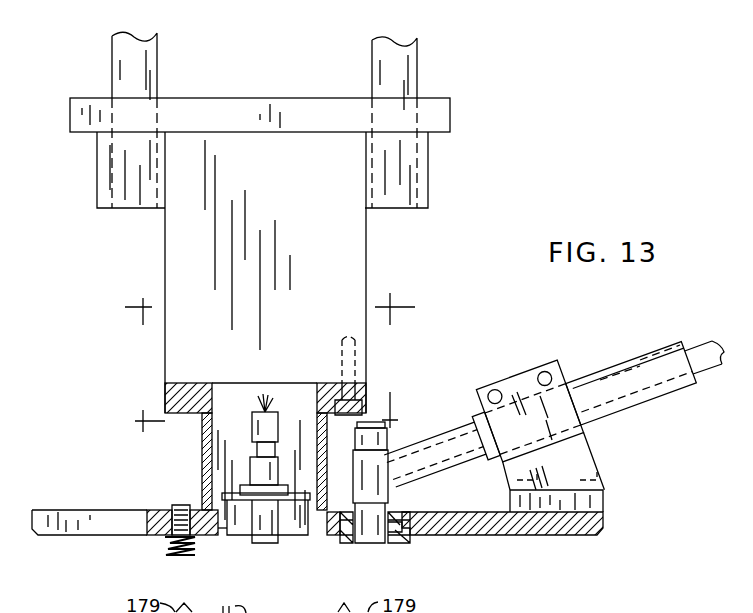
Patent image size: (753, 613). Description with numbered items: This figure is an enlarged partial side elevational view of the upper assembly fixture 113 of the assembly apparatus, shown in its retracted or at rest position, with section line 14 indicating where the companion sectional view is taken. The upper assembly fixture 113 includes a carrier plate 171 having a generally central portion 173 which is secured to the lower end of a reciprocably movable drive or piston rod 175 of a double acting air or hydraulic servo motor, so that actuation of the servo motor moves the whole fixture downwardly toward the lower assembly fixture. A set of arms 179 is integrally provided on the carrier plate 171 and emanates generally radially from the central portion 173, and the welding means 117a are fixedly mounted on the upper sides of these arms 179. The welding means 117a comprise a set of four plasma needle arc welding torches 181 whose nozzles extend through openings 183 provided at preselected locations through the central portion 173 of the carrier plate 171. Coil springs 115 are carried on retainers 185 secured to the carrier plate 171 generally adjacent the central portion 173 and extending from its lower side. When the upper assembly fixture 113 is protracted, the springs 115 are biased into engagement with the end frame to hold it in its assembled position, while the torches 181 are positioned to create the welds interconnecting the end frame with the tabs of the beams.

The section line 14- 14 is at (10, 307).
The piston rod 175 is at (348, 260).
The central portion 173 is at (318, 540).
The carrier plate 171 is at (160, 512).
The retainers 185 is at (166, 536).
The coil springs 115 is at (188, 555).
The plasma needle arc welding torches 181 is at (378, 546).
The openings 183 is at (396, 509).
The arms 179 is at (605, 535).
The welding means 117a is at (590, 424).
The upper assembly fixture 113 is at (683, 599).